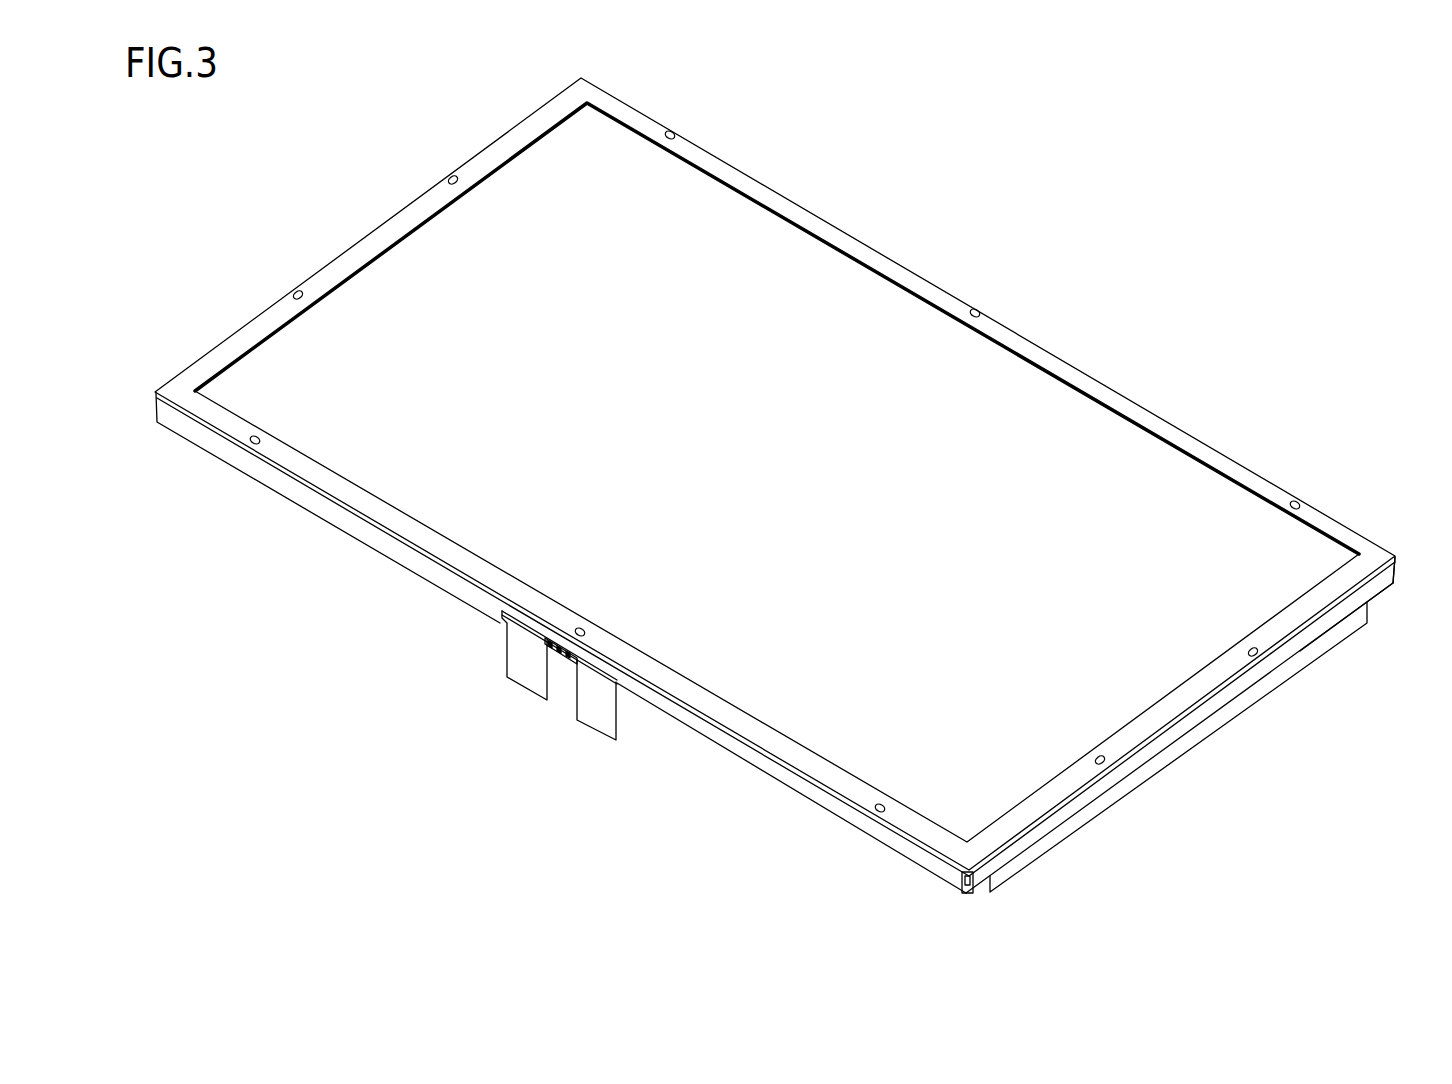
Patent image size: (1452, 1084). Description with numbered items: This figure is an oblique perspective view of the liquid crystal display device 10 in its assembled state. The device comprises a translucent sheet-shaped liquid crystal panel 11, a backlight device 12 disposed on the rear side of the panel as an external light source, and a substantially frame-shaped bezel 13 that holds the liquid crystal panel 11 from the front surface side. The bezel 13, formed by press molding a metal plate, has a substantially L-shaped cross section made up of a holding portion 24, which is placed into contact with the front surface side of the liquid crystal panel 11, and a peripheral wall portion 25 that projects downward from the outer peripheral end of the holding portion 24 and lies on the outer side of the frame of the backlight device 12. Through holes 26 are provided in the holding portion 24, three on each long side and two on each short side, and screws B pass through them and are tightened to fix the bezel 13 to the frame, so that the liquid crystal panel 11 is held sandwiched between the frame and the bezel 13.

The liquid crystal display device 10 is at (797, 519).
The liquid crystal panel 11 is at (1062, 433).
The backlight device 12 is at (1058, 882).
The bezel 13 is at (785, 195).
The holding portion 24 is at (838, 237).
The peripheral wall portion 25 is at (1387, 578).
The through holes 26 is at (1297, 511).
The screws B is at (253, 441).